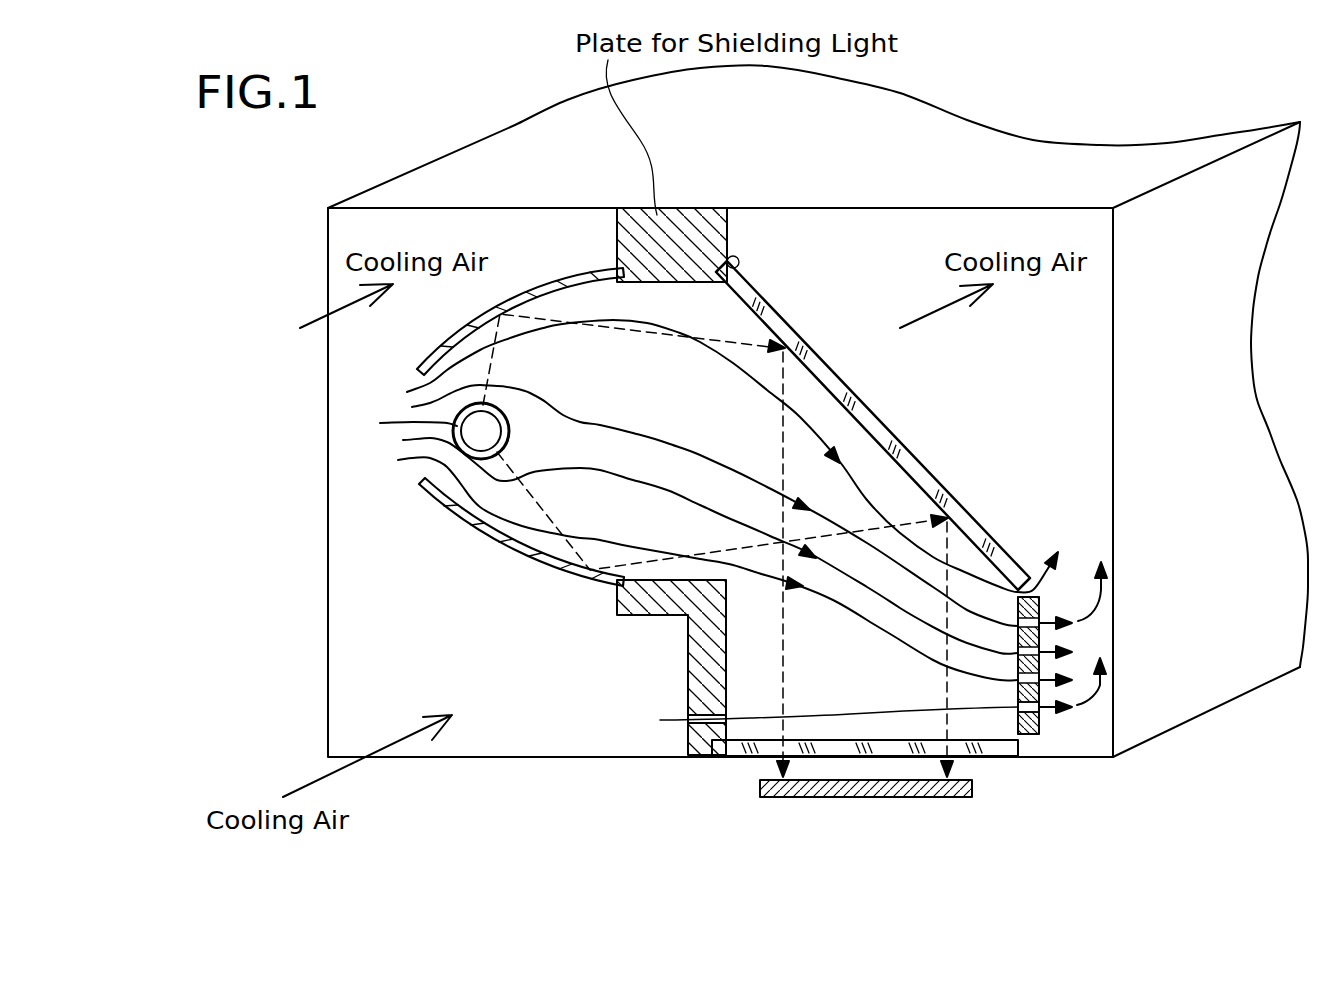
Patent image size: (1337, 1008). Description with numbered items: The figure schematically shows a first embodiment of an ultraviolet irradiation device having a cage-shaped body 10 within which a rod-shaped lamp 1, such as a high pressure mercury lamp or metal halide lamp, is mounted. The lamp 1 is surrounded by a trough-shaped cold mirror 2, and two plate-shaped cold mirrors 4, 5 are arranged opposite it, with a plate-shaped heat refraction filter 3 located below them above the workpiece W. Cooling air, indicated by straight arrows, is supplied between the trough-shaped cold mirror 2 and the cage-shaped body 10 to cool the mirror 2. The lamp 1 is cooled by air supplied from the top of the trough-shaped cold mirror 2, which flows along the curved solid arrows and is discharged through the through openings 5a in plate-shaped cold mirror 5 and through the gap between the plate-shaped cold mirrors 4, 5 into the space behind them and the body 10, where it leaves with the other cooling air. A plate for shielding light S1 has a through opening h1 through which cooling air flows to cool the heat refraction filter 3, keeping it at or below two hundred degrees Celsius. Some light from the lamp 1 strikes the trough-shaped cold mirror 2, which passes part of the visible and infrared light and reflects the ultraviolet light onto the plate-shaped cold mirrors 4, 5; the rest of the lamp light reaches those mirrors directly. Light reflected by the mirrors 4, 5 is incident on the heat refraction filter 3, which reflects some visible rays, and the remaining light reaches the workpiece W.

The cage-shaped body 10 is at (440, 150).
The rod-shaped lamp 1 is at (453, 428).
The trough-shaped cold mirror 2 is at (490, 540).
The plate-shaped cold mirror 4 is at (890, 428).
The plate-shaped cold mirror 5 is at (1043, 667).
The through openings 5a is at (1040, 692).
The through opening h1 is at (690, 718).
The plate for shielding light S1 is at (727, 655).
The heat refraction filter 3 is at (1003, 760).
The workpiece W is at (848, 798).